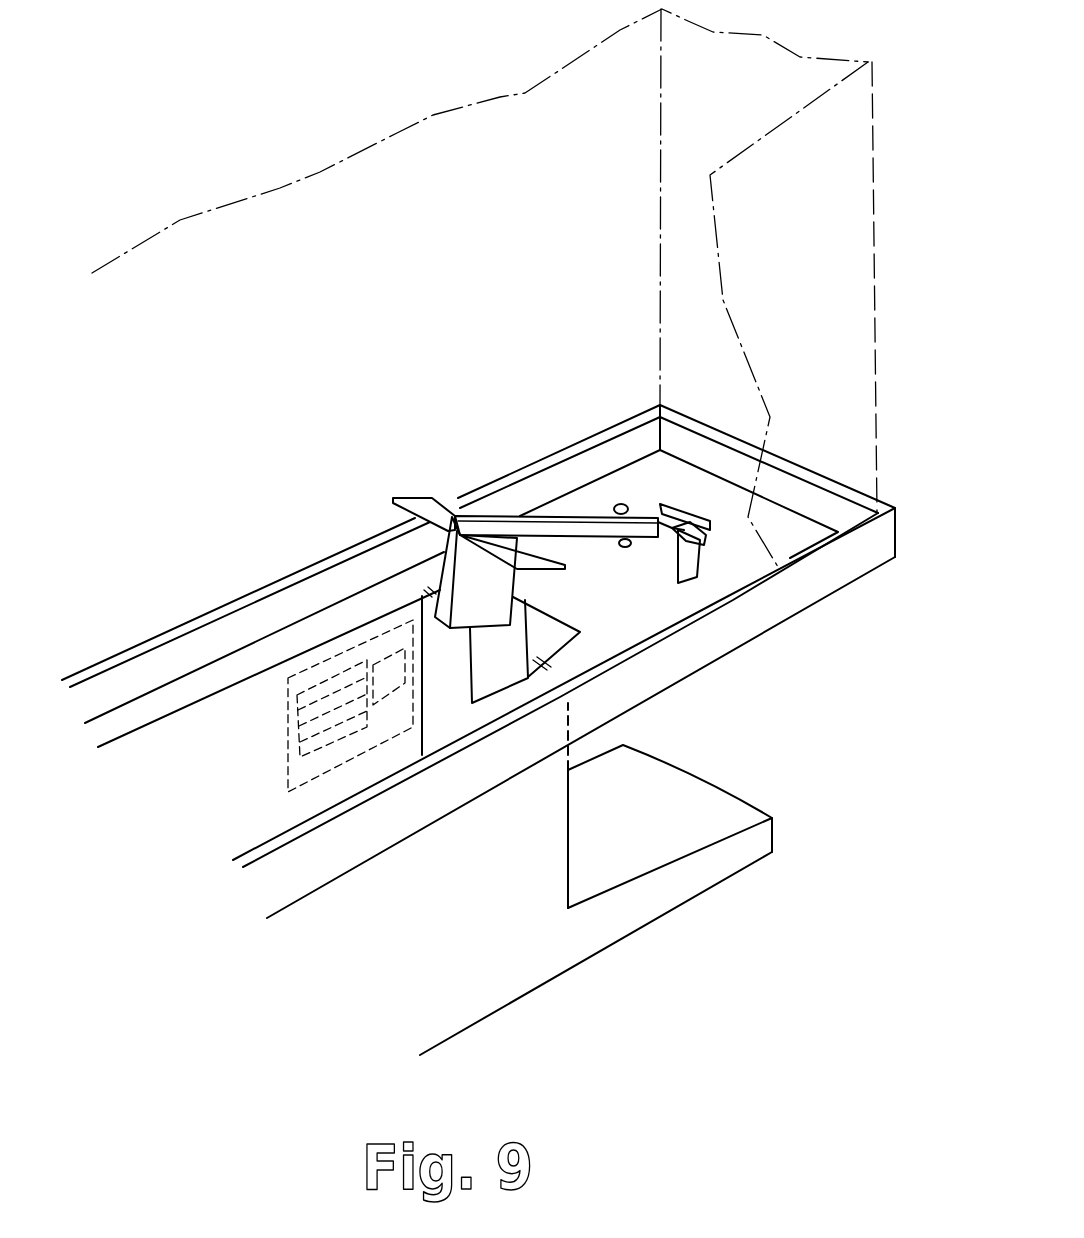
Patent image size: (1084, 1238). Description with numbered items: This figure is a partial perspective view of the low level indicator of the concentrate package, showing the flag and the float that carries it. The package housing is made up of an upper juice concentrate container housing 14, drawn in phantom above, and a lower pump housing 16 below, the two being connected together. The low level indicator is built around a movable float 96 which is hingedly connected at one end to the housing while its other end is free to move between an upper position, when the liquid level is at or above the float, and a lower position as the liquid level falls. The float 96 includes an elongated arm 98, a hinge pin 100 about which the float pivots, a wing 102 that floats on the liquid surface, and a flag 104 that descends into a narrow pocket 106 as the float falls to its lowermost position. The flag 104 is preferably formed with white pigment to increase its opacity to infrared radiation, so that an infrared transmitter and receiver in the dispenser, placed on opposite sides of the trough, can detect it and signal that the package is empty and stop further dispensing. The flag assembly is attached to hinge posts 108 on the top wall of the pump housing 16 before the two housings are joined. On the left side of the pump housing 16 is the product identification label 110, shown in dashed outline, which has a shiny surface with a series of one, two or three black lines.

The upper juice concentrate container housing 14 is at (876, 301).
The lower pump housing 16 is at (470, 925).
The float 96 is at (462, 448).
The elongated arm 98 is at (580, 527).
The hinge pin 100 is at (704, 545).
The wing 102 is at (421, 490).
The flag 104 is at (502, 603).
The narrow pocket 106 is at (505, 658).
The hinge posts 108 is at (682, 562).
The product identification label 110 is at (282, 717).